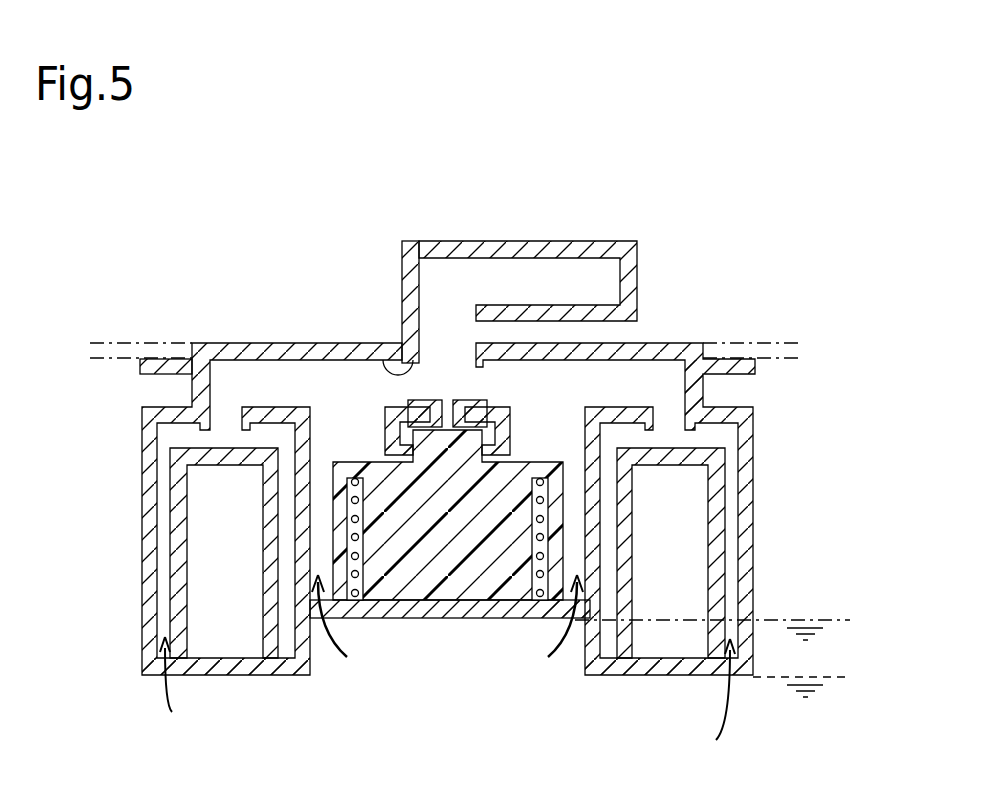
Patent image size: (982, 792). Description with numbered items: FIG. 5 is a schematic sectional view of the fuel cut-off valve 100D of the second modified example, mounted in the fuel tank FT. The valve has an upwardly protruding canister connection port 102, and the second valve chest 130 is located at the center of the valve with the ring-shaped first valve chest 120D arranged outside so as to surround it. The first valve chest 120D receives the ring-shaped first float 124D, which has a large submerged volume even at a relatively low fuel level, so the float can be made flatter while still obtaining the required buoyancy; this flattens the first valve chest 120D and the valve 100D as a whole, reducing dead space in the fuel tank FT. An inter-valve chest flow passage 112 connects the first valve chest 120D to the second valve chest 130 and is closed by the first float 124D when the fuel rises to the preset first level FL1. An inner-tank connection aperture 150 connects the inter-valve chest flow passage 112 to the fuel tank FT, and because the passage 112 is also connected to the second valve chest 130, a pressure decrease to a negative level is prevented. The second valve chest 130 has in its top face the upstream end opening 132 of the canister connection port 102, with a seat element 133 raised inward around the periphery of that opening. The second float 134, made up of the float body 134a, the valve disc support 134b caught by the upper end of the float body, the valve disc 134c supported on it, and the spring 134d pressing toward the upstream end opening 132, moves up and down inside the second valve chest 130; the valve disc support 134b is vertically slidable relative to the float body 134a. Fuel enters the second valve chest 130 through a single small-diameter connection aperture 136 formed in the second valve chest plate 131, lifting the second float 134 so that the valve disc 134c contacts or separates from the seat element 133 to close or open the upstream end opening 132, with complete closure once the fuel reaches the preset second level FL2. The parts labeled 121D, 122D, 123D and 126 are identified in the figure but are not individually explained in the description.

The fuel cut-off valve 100D is at (750, 223).
The canister connection port 102 is at (548, 241).
The upstream end opening 132 is at (420, 350).
The seat element 133 is at (380, 345).
The fuel tank FT is at (118, 362).
The inner-tank connection aperture 150 is at (190, 378).
The inter-valve chest flow passage 112 is at (299, 397).
The first valve chest 120D is at (718, 444).
The bottom of sub tank 121D is at (275, 676).
The upright wall portion 122D is at (657, 428).
The hook portion 123D is at (692, 429).
The first float 124D is at (712, 515).
The inlet flow 126 is at (447, 707).
The second valve chest 130 is at (565, 447).
The second valve chest plate 131 is at (447, 619).
The second float 134 is at (362, 460).
The float body 134a is at (553, 618).
The valve disc support 134b is at (385, 425).
The valve disc 134c is at (465, 400).
The spring 134d is at (357, 578).
The connection aperture 136 is at (323, 622).
The first level FL1 is at (827, 677).
The second level FL2 is at (827, 620).